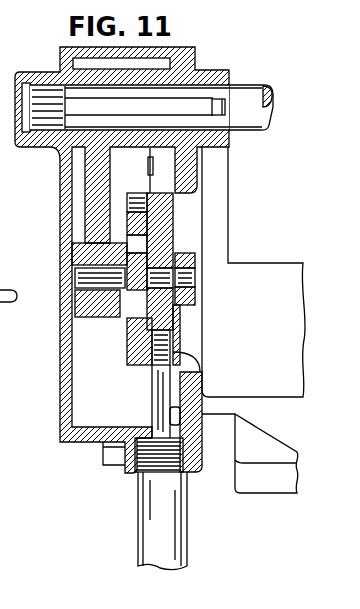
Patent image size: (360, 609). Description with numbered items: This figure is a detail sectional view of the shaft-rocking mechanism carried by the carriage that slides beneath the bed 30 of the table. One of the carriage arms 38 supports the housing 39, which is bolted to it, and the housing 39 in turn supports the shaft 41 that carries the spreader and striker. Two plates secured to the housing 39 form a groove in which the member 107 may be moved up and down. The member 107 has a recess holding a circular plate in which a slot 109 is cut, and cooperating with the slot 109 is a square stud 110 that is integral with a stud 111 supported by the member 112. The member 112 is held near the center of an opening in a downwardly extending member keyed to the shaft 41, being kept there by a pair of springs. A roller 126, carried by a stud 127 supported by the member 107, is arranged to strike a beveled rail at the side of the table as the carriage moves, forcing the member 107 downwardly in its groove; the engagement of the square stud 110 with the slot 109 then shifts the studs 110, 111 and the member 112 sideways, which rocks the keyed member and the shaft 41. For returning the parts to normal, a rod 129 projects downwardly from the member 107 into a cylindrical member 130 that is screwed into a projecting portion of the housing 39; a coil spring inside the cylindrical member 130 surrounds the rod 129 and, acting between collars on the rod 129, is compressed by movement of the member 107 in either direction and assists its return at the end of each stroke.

The bed 30 is at (285, 267).
The arms 38 is at (285, 480).
The housing 39 is at (48, 72).
The shaft 41 is at (249, 94).
The member 107 is at (165, 240).
The slot 109 is at (137, 322).
The square stud 110 is at (135, 290).
The stud 111 is at (83, 277).
The member 112 is at (85, 258).
The roller 126 is at (193, 263).
The stud 127 is at (158, 270).
The rod 129 is at (153, 387).
The cylindrical member 130 is at (145, 520).